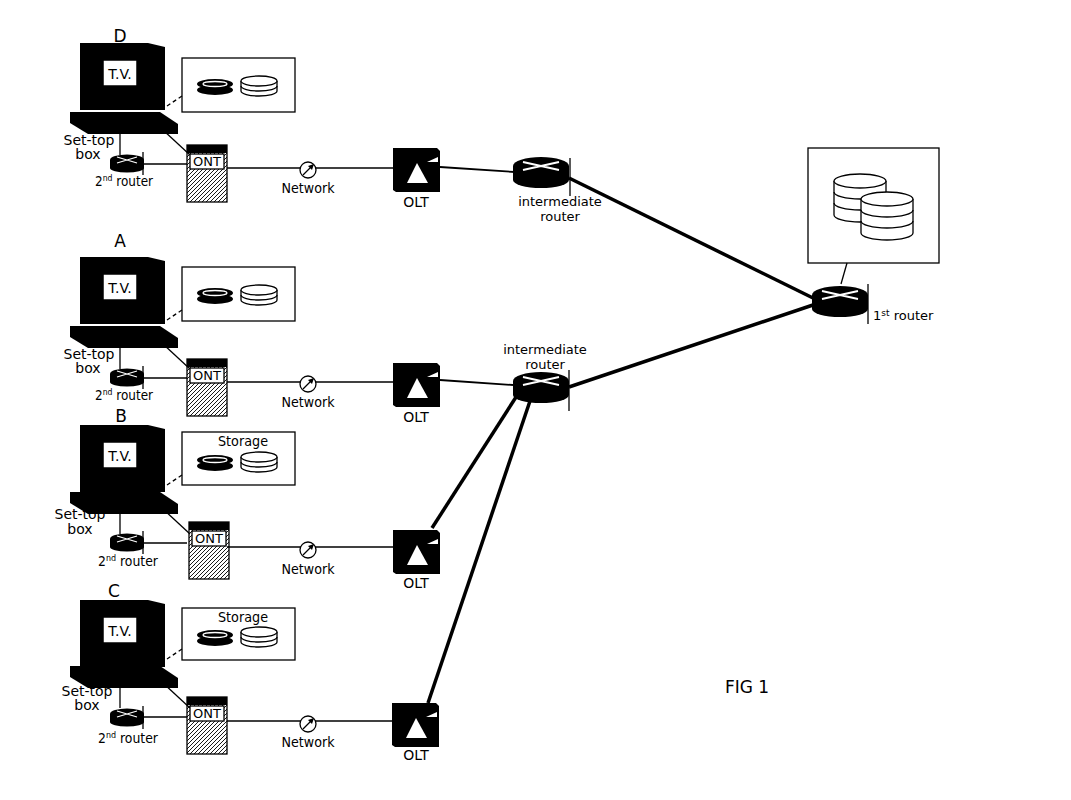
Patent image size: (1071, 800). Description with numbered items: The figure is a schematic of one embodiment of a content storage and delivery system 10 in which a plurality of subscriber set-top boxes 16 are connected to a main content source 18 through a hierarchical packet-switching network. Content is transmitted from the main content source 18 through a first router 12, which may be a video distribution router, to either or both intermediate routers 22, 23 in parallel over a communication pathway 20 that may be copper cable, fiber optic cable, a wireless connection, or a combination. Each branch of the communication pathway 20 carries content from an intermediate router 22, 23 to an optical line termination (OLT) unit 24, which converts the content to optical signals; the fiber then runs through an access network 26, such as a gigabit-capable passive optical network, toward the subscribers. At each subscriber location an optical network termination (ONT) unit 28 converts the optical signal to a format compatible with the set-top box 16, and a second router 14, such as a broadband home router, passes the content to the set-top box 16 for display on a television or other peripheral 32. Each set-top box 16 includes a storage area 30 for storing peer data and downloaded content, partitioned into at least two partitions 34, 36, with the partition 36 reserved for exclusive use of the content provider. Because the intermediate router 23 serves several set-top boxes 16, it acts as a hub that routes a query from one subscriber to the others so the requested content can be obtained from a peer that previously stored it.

The system 10 is at (680, 109).
The first router 12 is at (840, 316).
The second router 14 is at (110, 163).
The subscriber set-top box 16 is at (77, 127).
The main content source 18 is at (873, 205).
The communication pathway 20 is at (670, 226).
The intermediate router 22 is at (522, 189).
The intermediate router 23 is at (548, 403).
The optical line termination (OLT) unit 24 is at (425, 148).
The access network 26 is at (311, 163).
The optical network termination (ONT) unit 28 is at (227, 155).
The storage area 30 is at (262, 171).
The television, computer, or other peripheral 32 is at (100, 85).
The partition 34 is at (207, 82).
The partition 36 is at (277, 85).